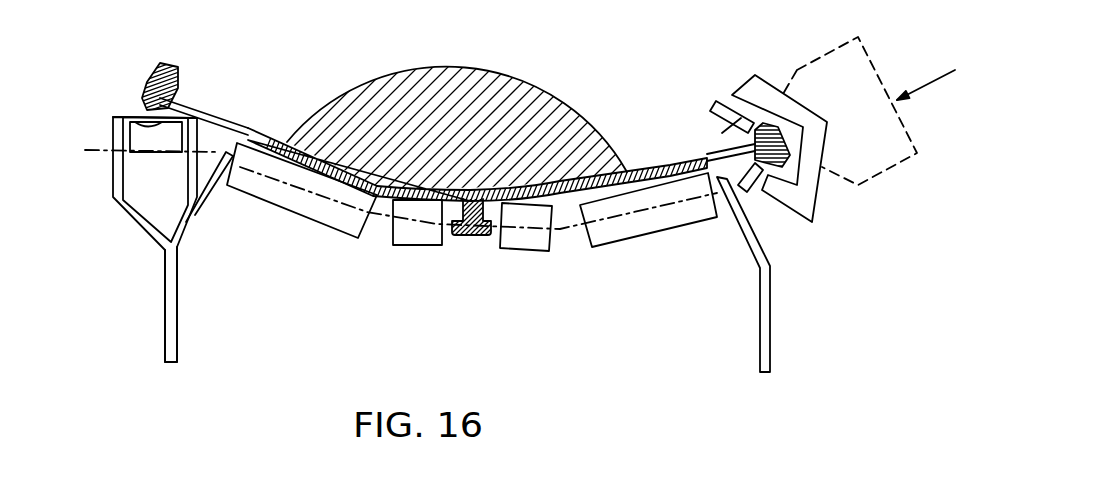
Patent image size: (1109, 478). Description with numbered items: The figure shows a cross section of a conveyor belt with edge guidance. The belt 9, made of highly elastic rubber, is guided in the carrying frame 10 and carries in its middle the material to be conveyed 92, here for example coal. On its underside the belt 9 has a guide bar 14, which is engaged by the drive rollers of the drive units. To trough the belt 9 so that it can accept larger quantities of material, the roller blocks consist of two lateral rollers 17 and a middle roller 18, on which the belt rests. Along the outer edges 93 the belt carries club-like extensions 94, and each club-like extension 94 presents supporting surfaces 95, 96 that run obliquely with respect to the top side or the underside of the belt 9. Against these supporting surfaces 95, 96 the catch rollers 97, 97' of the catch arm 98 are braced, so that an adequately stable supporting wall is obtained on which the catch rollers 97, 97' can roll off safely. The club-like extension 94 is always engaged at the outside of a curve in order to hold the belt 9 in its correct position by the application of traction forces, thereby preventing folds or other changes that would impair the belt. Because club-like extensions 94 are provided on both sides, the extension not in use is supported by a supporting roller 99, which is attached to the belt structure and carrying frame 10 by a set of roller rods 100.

The belt 9 is at (627, 172).
The carrying frame 10 is at (168, 317).
The guide bar 14 is at (486, 196).
The lateral rollers 17 is at (648, 225).
The middle roller 18 is at (517, 240).
The material to be conveyed 92 is at (437, 92).
The outer edges 93 is at (277, 140).
The club-like extension 94 is at (182, 70).
The supporting surface 95 is at (181, 100).
The supporting surface 96 is at (146, 120).
The catch roller 97 is at (720, 98).
The catch roller 97' is at (772, 209).
The catch arm 98 is at (810, 138).
The supporting roller 99 is at (165, 138).
The roller rods 100 is at (147, 227).